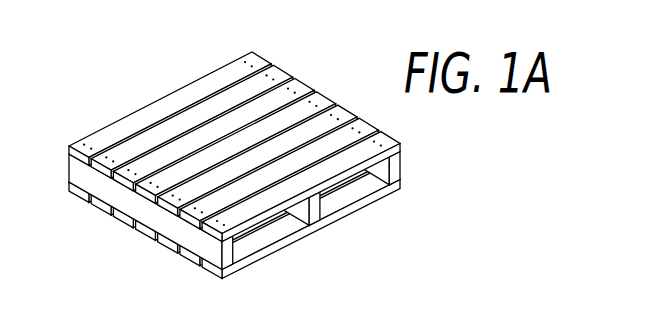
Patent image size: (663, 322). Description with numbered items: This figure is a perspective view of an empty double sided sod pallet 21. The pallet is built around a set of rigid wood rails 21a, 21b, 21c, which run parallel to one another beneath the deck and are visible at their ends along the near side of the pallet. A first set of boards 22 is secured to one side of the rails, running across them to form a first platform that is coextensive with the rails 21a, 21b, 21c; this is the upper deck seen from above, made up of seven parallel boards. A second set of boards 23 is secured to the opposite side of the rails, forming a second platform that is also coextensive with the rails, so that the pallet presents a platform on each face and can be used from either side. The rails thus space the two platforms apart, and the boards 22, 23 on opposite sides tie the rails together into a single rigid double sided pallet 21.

The double sided sod pallet 21 is at (337, 73).
The rigid wood rail 21a is at (181, 230).
The rigid wood rail 21b is at (298, 212).
The rigid wood rail 21c is at (401, 168).
The first set of boards 22 is at (148, 115).
The second set of boards 23 is at (121, 222).